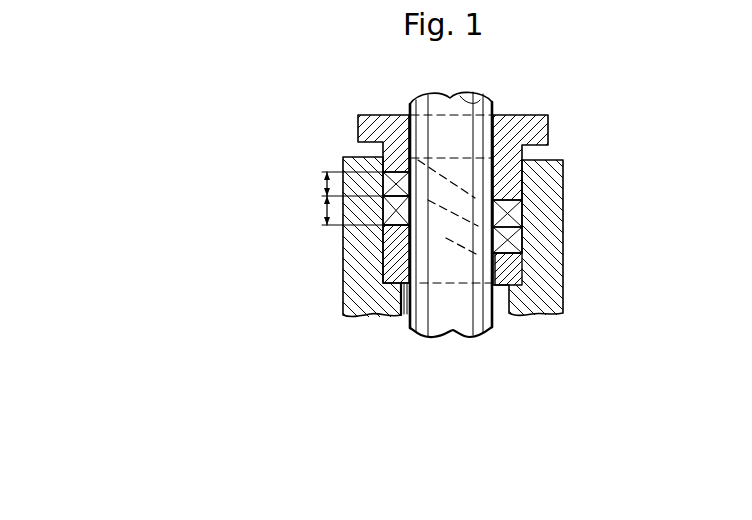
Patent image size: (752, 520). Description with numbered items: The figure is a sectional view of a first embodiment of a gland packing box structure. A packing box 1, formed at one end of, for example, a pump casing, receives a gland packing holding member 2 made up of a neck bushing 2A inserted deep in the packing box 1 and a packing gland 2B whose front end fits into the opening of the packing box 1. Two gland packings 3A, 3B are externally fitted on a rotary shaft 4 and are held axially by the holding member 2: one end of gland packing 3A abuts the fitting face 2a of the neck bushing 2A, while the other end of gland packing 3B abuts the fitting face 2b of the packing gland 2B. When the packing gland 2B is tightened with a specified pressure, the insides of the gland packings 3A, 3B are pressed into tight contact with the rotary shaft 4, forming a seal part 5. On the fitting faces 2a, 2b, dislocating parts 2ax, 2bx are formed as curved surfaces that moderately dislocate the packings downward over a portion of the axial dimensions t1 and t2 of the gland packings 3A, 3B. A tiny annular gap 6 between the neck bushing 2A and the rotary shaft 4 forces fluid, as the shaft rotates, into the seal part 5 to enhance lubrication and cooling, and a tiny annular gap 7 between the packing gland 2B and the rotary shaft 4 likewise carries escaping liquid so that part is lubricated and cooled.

The packing box 1 is at (553, 253).
The gland packing holding member 2 is at (214, 172).
The neck bushing 2A is at (385, 278).
The packing gland 2B is at (358, 122).
The fitting face 2a is at (454, 251).
The fitting face 2b is at (437, 178).
The dislocating part 2ax is at (562, 283).
The dislocating part 2bx is at (515, 216).
The gland packing 3A is at (517, 238).
The gland packing 3B is at (517, 212).
The rotary shaft 4 is at (492, 330).
The seal part 5 is at (555, 158).
The tiny annular gap 6 is at (412, 323).
The tiny annular gap 7 is at (409, 110).
The dimension t1 is at (327, 212).
The dimension t2 is at (327, 184).